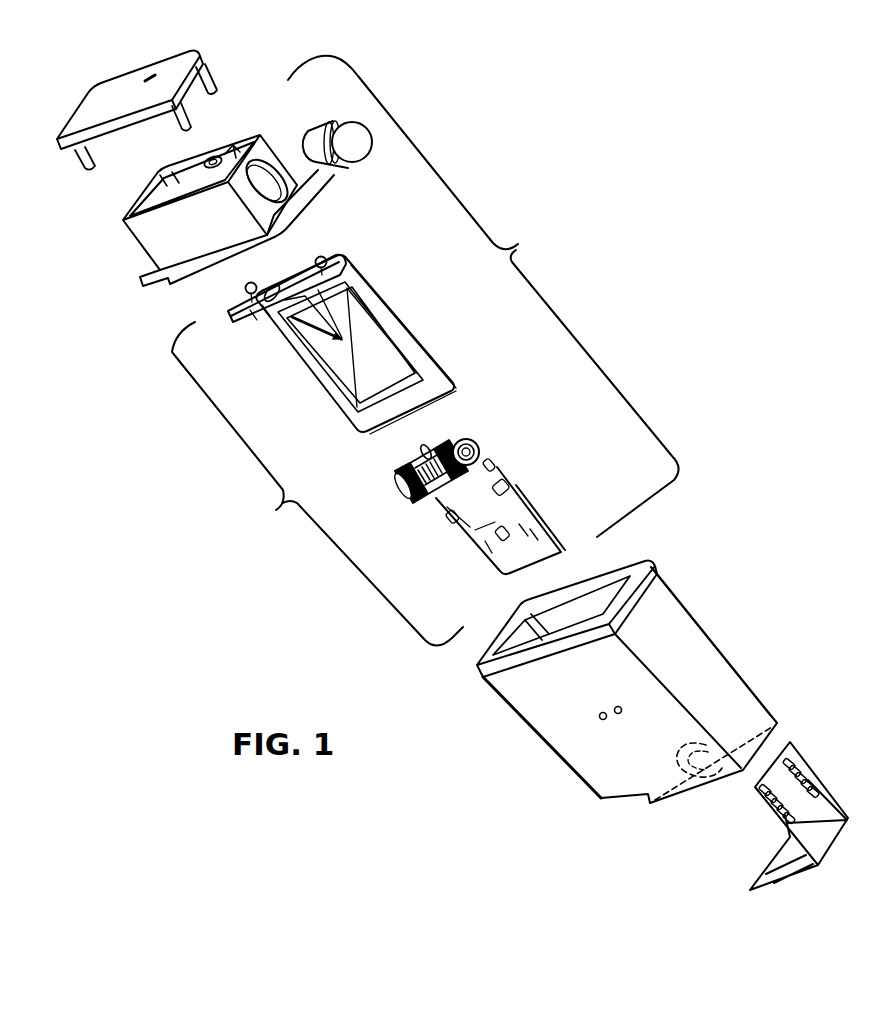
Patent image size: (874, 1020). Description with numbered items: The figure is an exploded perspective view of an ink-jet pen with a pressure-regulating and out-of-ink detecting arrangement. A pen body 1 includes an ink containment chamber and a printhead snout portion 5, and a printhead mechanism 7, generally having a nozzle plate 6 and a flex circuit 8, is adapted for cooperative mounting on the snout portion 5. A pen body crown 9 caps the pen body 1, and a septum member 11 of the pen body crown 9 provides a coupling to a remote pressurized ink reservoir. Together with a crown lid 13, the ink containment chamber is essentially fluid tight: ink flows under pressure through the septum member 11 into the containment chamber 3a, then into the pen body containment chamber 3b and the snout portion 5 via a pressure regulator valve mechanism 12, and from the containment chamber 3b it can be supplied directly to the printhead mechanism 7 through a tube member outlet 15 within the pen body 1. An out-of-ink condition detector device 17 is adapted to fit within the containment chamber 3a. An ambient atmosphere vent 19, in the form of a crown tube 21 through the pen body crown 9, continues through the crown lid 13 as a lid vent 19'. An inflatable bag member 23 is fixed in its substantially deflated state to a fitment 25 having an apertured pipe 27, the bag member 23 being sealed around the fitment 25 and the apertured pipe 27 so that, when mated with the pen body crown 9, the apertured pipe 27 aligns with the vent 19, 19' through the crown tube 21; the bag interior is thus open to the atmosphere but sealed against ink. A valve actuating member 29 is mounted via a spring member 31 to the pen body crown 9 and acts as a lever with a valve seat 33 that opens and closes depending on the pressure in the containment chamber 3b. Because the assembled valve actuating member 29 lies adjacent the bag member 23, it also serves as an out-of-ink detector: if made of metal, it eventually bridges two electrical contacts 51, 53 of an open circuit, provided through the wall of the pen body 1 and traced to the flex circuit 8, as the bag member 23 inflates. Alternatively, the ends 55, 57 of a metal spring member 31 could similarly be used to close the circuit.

The pen body 1 is at (667, 622).
The containment chamber 3a is at (150, 196).
The pen body containment chamber 3b is at (522, 632).
The printhead snout portion 5 is at (650, 777).
The nozzle plate 6 is at (777, 861).
The printhead mechanism 7 is at (825, 872).
The flex circuit 8 is at (799, 762).
The pen body crown 9 is at (160, 236).
The septum member 11 is at (353, 128).
The pressure regulator valve mechanism 12 is at (317, 484).
The crown lid 13 is at (197, 62).
The tube member outlet 15 is at (717, 740).
The out-of-ink condition detector device 17 is at (483, 296).
The ambient atmosphere vent 19 is at (213, 142).
The lid vent 19' is at (129, 61).
The crown tube 21 is at (233, 147).
The inflatable bag member 23 is at (289, 280).
The fitment 25 is at (245, 291).
The apertured pipe 27 is at (327, 256).
The valve actuating member 29 is at (547, 540).
The spring member 31 is at (406, 492).
The valve seat 33 is at (423, 453).
The electrical contact 51 is at (600, 713).
The electrical contact 53 is at (621, 713).
The spring member end 55 is at (395, 472).
The spring member end 57 is at (430, 455).